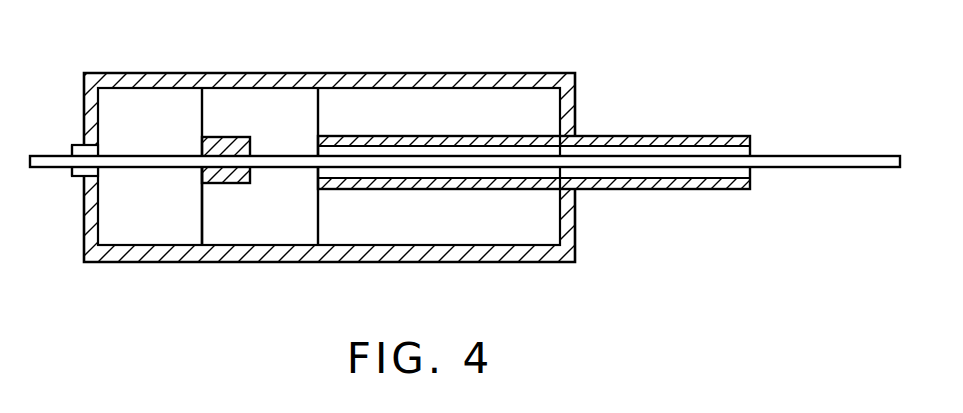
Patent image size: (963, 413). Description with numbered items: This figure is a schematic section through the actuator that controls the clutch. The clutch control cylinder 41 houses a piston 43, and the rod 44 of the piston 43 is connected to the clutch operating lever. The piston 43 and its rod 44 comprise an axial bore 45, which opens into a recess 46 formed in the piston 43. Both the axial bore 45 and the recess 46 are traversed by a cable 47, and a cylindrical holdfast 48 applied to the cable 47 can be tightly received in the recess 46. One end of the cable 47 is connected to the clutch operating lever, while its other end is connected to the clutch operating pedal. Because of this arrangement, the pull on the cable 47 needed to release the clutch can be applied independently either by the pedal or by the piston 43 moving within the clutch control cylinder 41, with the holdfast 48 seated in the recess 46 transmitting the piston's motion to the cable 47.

The clutch control cylinder 41 is at (437, 73).
The piston 43 is at (213, 107).
The rod 44 is at (653, 137).
The axial bore 45 is at (293, 156).
The recess 46 is at (235, 137).
The cable 47 is at (196, 167).
The cylindrical holdfast 48 is at (130, 155).